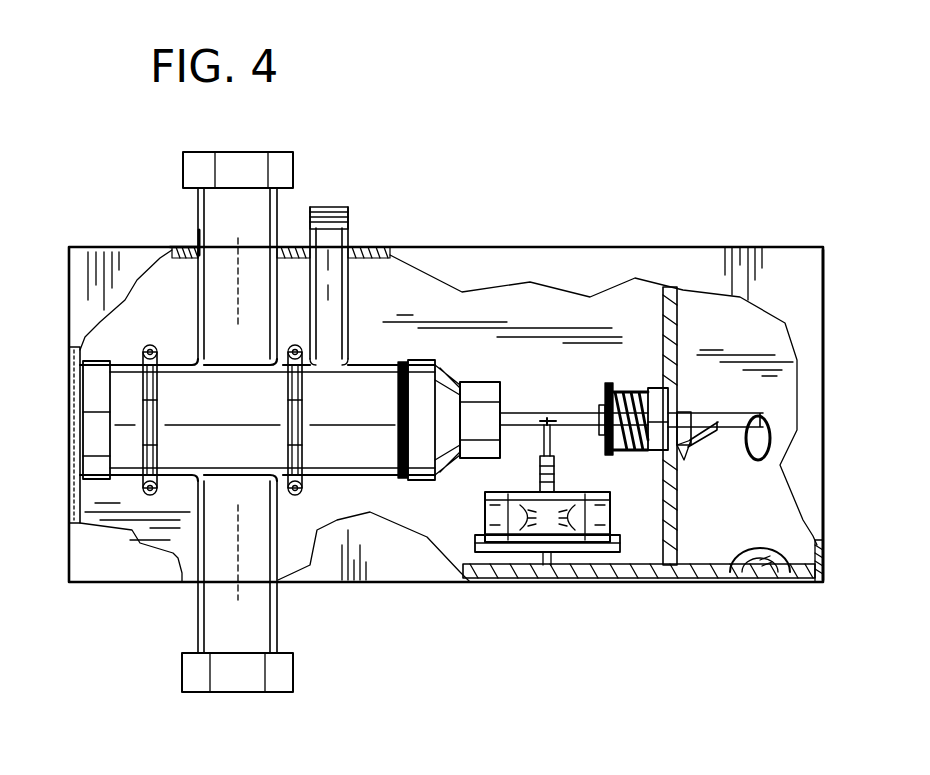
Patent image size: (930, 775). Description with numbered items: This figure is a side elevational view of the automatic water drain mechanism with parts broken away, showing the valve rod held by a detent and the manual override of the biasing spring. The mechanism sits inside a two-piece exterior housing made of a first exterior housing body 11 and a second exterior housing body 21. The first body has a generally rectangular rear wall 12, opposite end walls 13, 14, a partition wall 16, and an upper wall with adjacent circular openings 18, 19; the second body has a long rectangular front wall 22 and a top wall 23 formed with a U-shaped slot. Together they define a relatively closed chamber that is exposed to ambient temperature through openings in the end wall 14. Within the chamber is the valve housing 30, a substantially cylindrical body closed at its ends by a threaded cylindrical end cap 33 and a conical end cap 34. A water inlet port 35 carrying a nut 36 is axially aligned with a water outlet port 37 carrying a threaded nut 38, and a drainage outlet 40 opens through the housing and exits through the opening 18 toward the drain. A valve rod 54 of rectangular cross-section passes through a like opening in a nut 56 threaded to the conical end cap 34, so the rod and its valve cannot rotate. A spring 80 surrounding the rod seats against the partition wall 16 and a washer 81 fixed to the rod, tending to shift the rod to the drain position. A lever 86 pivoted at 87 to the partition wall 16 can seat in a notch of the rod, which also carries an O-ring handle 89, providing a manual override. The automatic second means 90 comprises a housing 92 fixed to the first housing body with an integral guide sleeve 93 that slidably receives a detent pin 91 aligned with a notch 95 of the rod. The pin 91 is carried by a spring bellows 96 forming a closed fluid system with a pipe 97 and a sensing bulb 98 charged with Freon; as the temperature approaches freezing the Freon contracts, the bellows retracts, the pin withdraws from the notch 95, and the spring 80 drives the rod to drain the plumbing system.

The first exterior housing body 11 is at (395, 258).
The rear wall 12 is at (533, 331).
The end wall 13 is at (75, 447).
The end wall 14 is at (822, 560).
The partition wall 16 is at (678, 331).
The circular opening 18 is at (318, 245).
The circular opening 19 is at (199, 237).
The second exterior housing body 21 is at (837, 381).
The front wall 22 is at (805, 297).
The top wall 23 is at (186, 262).
The valve housing 30 is at (373, 350).
The cylindrical end cap 33 is at (93, 383).
The conical end cap 34 is at (441, 458).
The water inlet port 35 is at (242, 637).
The nut 36 is at (242, 688).
The water outlet port 37 is at (245, 225).
The threaded nut 38 is at (283, 153).
The drainage outlet 40 is at (347, 233).
The valve rod 54 is at (514, 411).
The nut 56 is at (490, 431).
The biasing spring 80 is at (580, 332).
The washer 81 is at (632, 370).
The lever 86 is at (698, 432).
The pivot 87 is at (684, 452).
The O-ring handle 89 is at (764, 462).
The automatic second means 90 is at (602, 475).
The detent pin 91 is at (551, 438).
The housing 92 is at (485, 521).
The guide sleeve 93 is at (557, 466).
The notch 95 is at (546, 423).
The spring bellows 96 is at (610, 512).
The pipe 97 is at (640, 579).
The sensing bulb 98 is at (758, 577).